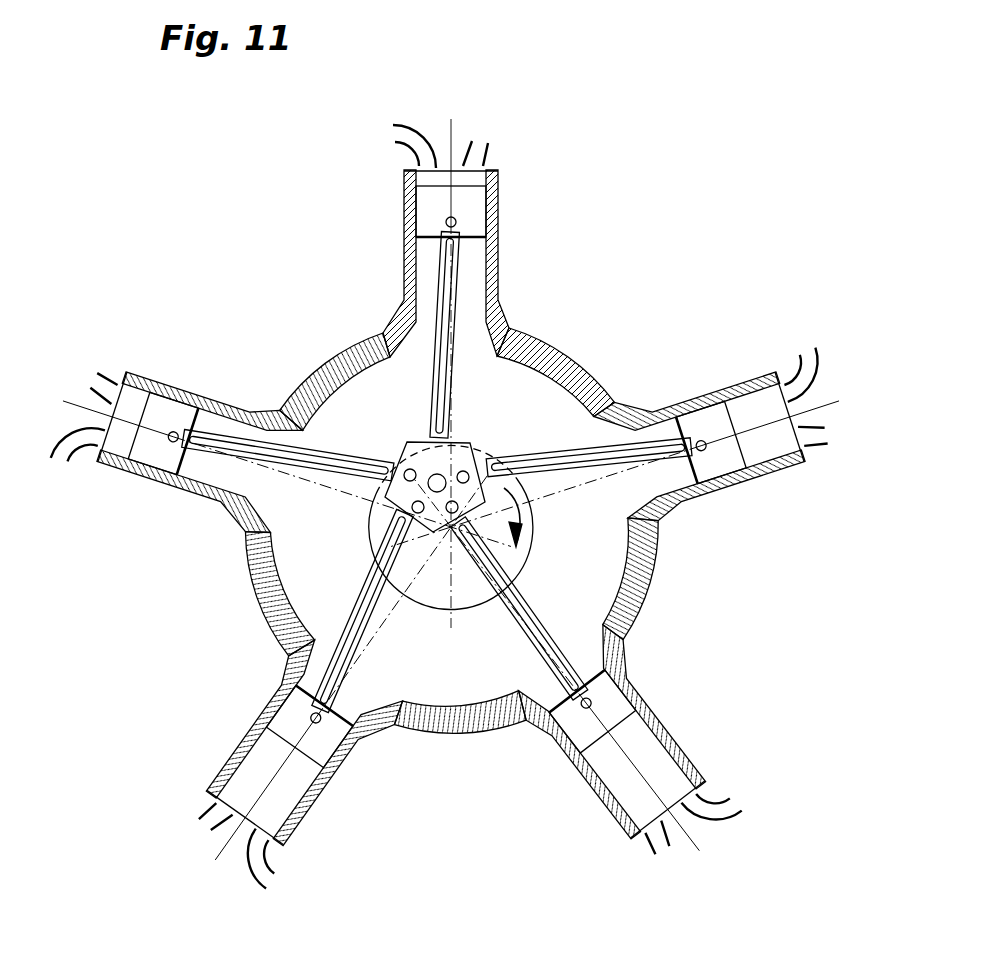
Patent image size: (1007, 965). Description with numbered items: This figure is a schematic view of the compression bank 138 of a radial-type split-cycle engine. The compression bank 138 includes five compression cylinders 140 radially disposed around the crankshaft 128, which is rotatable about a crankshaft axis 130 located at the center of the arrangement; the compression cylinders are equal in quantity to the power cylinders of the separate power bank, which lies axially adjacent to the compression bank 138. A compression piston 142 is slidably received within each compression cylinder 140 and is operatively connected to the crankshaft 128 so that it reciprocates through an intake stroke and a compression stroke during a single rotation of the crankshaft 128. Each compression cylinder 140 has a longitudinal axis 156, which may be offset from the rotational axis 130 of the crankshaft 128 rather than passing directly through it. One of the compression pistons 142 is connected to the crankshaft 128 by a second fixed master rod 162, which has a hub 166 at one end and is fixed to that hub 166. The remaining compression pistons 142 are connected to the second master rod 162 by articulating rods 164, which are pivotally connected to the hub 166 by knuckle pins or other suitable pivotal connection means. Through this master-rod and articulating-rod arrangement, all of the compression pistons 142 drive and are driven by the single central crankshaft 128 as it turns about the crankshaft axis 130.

The crankshaft 128 is at (530, 525).
The crankshaft axis 130 is at (451, 600).
The compression bank 138 is at (573, 375).
The compression cylinder 140 is at (650, 730).
The compression piston 142 is at (590, 752).
The longitudinal axis 156 is at (222, 834).
The second fixed master rod 162 is at (447, 382).
The articulating rods 164 is at (520, 602).
The hub 166 is at (416, 440).